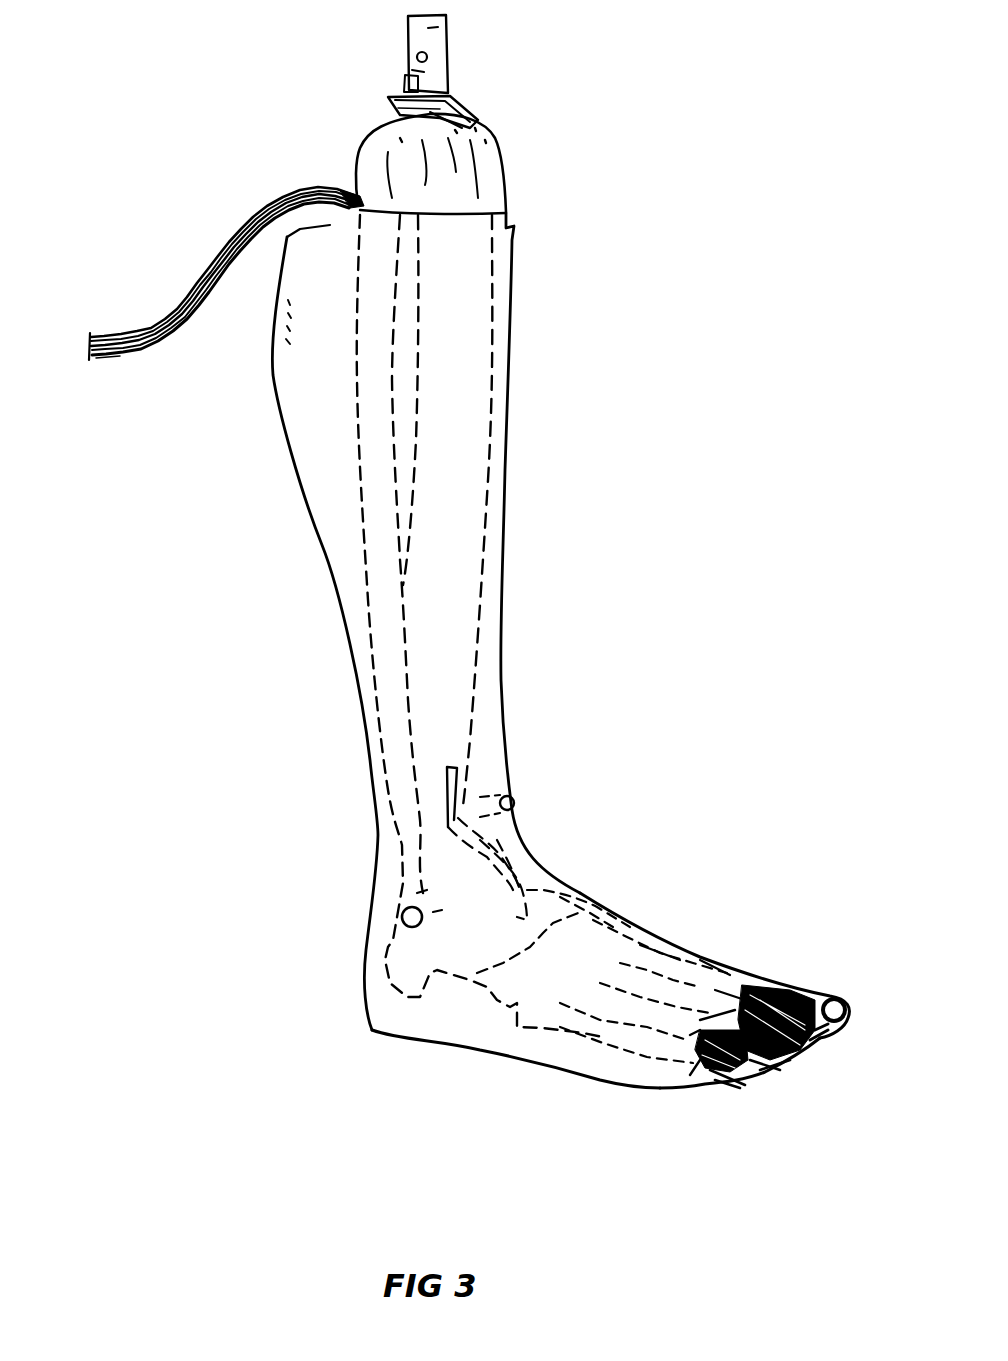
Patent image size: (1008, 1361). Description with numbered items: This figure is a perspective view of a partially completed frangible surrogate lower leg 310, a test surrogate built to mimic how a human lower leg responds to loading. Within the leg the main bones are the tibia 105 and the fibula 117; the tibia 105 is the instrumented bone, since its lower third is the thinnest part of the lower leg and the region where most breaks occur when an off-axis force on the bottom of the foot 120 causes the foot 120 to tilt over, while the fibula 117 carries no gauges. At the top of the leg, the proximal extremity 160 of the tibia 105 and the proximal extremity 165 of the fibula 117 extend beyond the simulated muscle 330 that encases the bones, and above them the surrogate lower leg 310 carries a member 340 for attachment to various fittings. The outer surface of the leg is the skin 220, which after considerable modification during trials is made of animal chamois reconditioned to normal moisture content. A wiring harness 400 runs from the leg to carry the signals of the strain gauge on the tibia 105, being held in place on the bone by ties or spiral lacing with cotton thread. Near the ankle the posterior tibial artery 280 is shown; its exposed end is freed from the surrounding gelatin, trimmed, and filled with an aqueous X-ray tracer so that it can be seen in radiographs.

The tibia 105 is at (465, 512).
The fibula 117 is at (358, 537).
The foot 120 is at (575, 1005).
The proximal extremity of the tibia 160 is at (505, 175).
The proximal extremity of the fibula 165 is at (363, 170).
The skin 220 is at (512, 352).
The posterior tibial artery 280 is at (460, 830).
The frangible surrogate lower leg 310 is at (252, 722).
The simulated muscle 330 is at (315, 468).
The member 340 is at (438, 40).
The wiring harness 400 is at (222, 234).